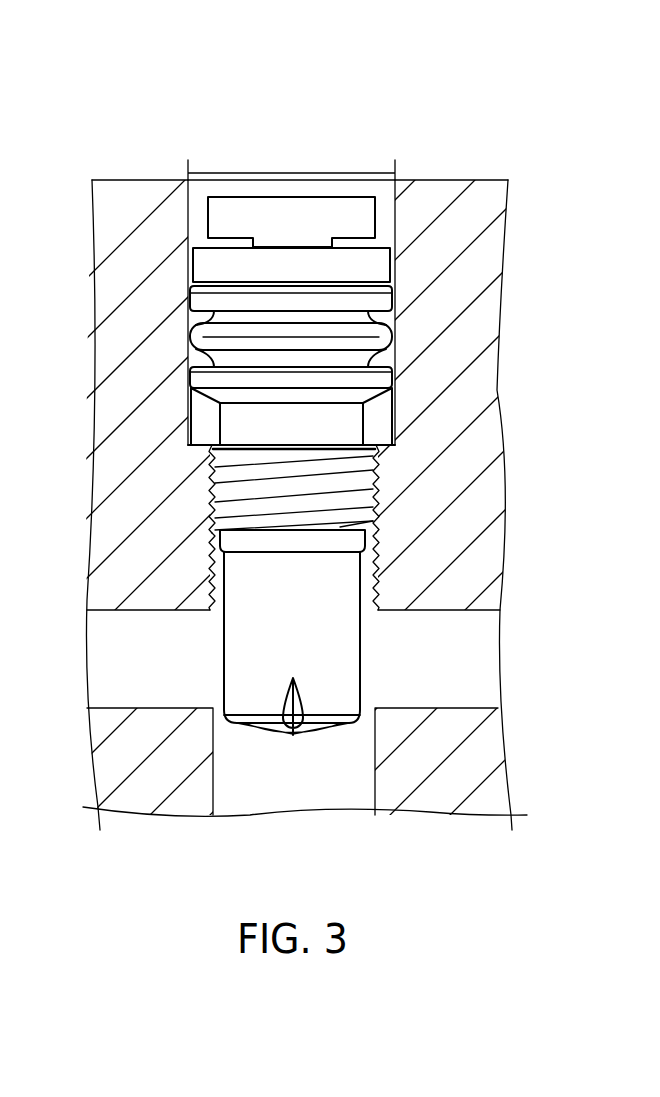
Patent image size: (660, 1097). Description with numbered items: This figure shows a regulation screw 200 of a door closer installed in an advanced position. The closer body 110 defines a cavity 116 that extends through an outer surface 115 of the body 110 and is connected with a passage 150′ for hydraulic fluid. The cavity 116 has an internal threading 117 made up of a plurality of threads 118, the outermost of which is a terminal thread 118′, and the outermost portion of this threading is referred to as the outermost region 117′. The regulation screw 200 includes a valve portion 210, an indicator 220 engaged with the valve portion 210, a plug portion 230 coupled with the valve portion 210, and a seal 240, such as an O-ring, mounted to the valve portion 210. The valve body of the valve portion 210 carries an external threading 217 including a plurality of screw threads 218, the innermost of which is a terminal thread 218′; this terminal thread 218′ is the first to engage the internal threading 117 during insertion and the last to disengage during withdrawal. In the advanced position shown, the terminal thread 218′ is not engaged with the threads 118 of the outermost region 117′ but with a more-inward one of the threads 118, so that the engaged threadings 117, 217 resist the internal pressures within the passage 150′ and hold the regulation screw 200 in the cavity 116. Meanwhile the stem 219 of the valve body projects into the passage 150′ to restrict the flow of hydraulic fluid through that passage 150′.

The body 110 is at (497, 205).
The outer surface 115 is at (434, 180).
The cavity 116 is at (219, 153).
The internal threading 117 is at (188, 573).
The outermost region of the internal threading 117′ is at (191, 458).
The threads 118 is at (375, 563).
The terminal thread 118′ is at (375, 452).
The passage 150′ is at (104, 652).
The regulation screw 200 is at (146, 263).
The valve portion 210 is at (378, 381).
The external threading 217 is at (193, 481).
The screw threads 218 is at (208, 498).
The terminal thread 218′ is at (358, 527).
The stem 219 is at (353, 648).
The indicator 220 is at (373, 266).
The plug portion 230 is at (378, 216).
The seal 240 is at (380, 331).